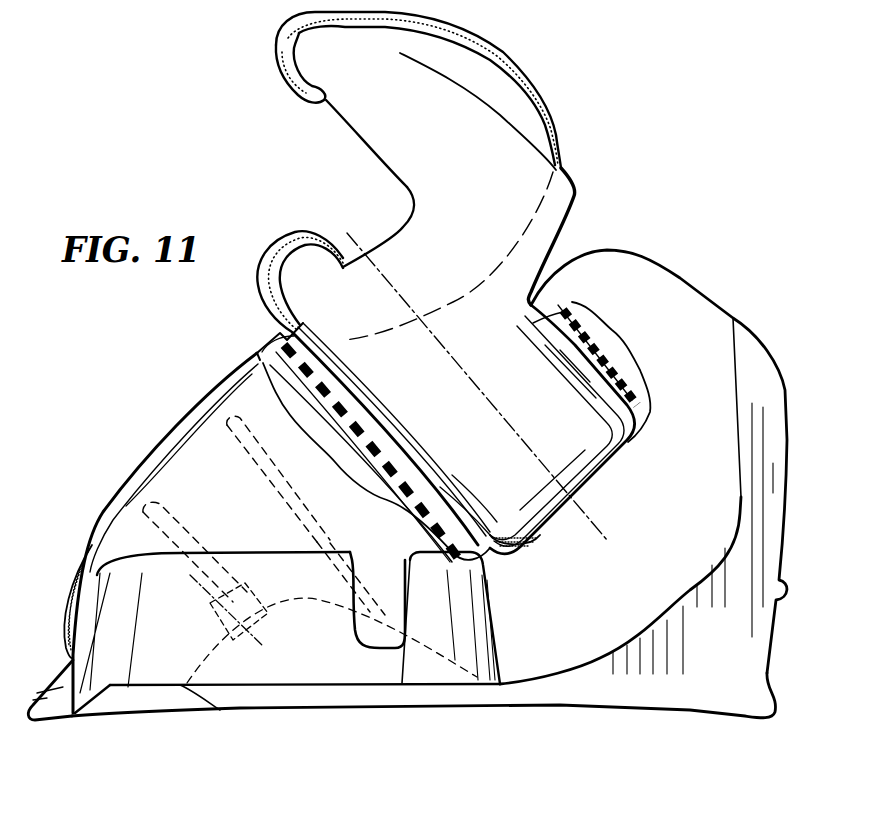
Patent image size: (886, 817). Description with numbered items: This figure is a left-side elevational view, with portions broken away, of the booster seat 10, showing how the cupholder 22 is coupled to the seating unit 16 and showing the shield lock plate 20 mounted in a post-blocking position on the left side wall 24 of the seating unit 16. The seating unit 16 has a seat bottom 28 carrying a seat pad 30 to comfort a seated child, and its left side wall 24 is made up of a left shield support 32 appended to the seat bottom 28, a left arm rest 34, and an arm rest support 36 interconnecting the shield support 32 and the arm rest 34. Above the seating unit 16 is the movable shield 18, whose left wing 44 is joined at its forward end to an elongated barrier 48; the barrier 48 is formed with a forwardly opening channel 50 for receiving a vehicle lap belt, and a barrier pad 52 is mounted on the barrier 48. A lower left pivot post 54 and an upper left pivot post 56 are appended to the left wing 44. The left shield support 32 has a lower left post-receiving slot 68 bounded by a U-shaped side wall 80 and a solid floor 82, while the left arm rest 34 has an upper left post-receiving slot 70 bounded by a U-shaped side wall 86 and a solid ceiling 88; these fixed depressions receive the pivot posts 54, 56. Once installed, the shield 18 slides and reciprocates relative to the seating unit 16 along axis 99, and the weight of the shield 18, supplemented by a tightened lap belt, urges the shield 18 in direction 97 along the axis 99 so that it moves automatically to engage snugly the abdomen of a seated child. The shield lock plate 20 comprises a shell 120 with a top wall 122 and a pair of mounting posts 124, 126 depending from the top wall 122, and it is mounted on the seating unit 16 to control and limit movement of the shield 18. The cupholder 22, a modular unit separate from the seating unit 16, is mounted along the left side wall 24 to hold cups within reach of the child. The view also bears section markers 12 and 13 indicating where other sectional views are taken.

The booster seat 10 is at (683, 202).
The booster seat 12 is at (137, 532).
The section line 13 is at (499, 805).
The seating unit 16 is at (103, 487).
The movable shield 18 is at (222, 86).
The shield lock plate 20 is at (440, 393).
The cupholder 22 is at (510, 630).
The left side wall 24 is at (584, 686).
The seat bottom 28 is at (48, 617).
The seat pad 30 is at (70, 576).
The left shield support 32 is at (171, 420).
The left arm rest 34 is at (660, 296).
The arm rest support 36 is at (640, 587).
The left wing 44 is at (435, 367).
The elongated barrier 48 is at (384, 186).
The channel 50 is at (292, 170).
The barrier pad 52 is at (500, 64).
The lower left pivot post 54 is at (462, 513).
The upper left pivot post 56 is at (603, 385).
The lower left post-receiving slot 68 is at (373, 470).
The upper left post-receiving slot 70 is at (560, 318).
The U-shaped side wall 80 is at (450, 488).
The solid floor 82 is at (425, 478).
The U-shaped side wall 86 is at (583, 370).
The solid ceiling 88 is at (597, 357).
The direction 97 is at (480, 358).
The axis 99 is at (598, 520).
The shell 120 is at (332, 345).
The top wall 122 is at (392, 444).
The mounting post 124 is at (272, 336).
The mounting post 126 is at (348, 443).